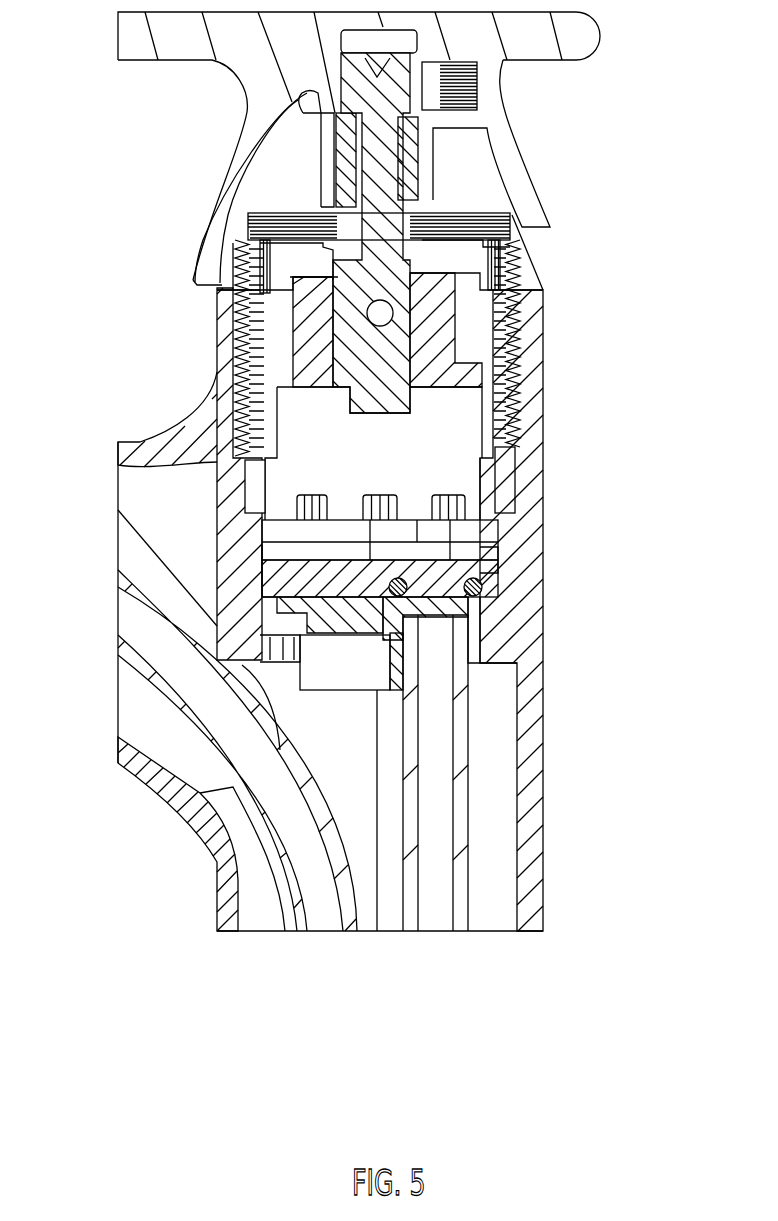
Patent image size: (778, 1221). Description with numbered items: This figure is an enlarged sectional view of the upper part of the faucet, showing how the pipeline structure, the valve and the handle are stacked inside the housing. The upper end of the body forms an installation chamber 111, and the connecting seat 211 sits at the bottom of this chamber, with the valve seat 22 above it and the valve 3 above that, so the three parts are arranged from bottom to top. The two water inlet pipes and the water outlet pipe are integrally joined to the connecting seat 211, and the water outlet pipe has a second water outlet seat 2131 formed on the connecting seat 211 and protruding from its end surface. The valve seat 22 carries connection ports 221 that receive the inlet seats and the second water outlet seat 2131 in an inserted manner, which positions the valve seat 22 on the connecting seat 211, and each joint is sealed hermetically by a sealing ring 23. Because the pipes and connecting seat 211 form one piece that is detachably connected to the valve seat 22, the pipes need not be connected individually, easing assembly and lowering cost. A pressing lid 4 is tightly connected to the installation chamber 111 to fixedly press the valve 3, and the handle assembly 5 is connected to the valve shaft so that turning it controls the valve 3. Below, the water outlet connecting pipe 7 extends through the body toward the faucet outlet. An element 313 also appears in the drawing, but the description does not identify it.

The handle assembly 5 is at (470, 118).
The pressing lid 4 is at (515, 318).
The installation chamber 111 is at (537, 397).
The valve 3 is at (432, 530).
The valve seat 22 is at (293, 587).
The connection ports 221 is at (473, 577).
The sealing ring 23 is at (460, 592).
The second water outlet seat 2131 is at (470, 598).
The connecting seat 211 is at (362, 597).
The inner tube 313 is at (460, 803).
The water outlet connecting pipe 7 is at (228, 853).